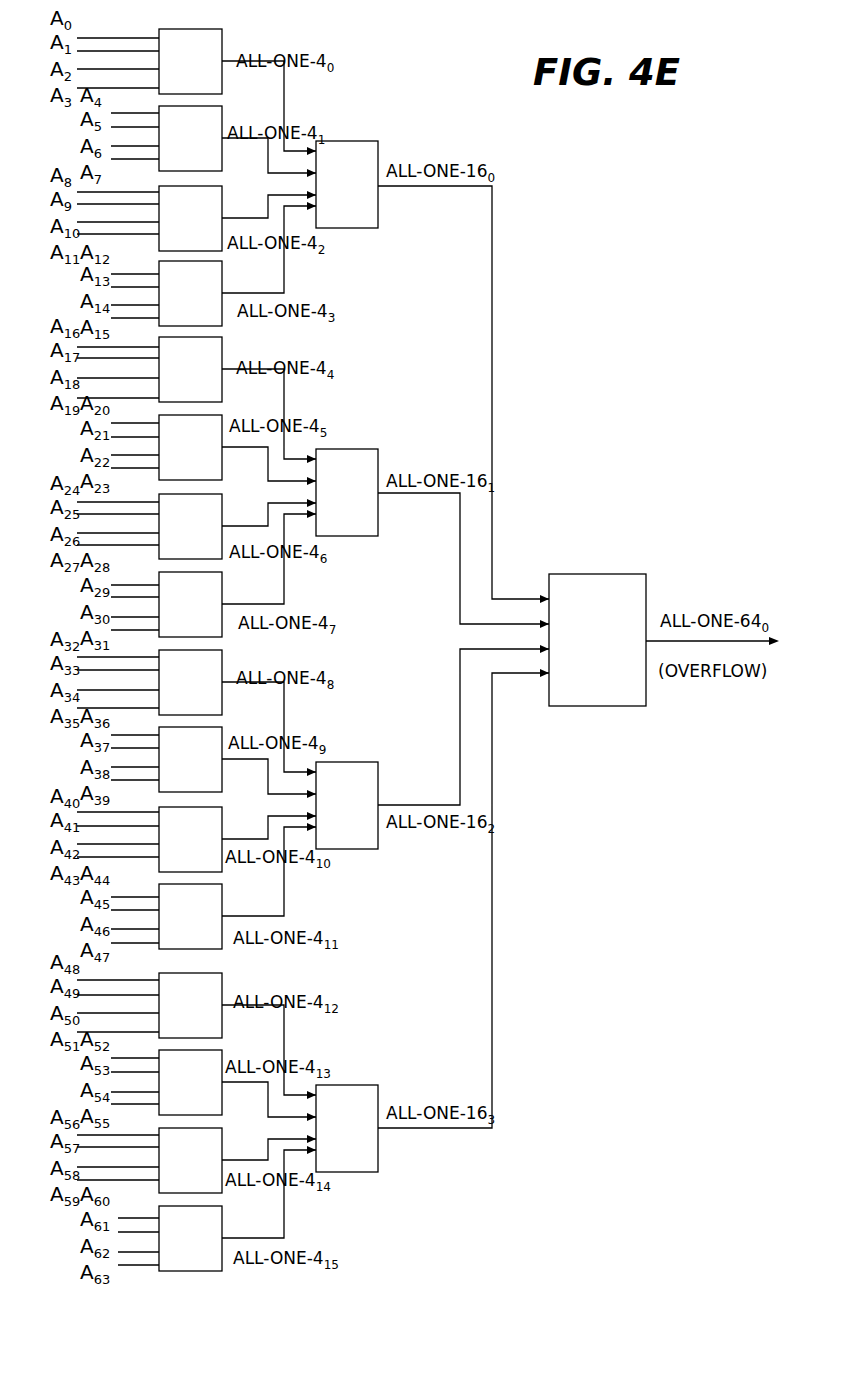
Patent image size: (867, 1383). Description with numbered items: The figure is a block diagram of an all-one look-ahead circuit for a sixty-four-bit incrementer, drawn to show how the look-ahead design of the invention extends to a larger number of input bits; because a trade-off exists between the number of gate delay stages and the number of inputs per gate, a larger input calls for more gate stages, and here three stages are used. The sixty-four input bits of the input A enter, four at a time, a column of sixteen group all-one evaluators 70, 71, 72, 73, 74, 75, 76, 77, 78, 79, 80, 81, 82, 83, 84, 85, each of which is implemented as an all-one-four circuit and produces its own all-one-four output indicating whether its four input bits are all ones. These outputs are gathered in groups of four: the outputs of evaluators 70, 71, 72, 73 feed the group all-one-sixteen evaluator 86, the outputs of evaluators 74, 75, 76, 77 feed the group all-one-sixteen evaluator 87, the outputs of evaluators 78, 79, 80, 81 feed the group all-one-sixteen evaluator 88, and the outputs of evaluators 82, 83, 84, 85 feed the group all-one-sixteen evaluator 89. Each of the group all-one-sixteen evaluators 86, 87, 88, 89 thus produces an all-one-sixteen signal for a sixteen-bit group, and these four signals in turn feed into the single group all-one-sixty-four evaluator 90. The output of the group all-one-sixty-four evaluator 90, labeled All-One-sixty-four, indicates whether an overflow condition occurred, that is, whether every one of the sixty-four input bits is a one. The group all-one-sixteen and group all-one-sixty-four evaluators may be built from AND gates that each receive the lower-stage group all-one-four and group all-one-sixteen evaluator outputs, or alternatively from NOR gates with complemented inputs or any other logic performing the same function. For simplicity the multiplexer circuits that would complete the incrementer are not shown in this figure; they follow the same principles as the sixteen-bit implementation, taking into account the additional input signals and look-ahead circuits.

The group all-one evaluator 70 is at (180, 73).
The group all-one evaluator 71 is at (180, 150).
The group all-one evaluator 72 is at (180, 230).
The group all-one evaluator 73 is at (180, 305).
The group all-one evaluator 74 is at (180, 381).
The group all-one evaluator 75 is at (180, 459).
The group all-one evaluator 76 is at (180, 538).
The group all-one evaluator 77 is at (180, 616).
The group all-one evaluator 78 is at (180, 694).
The group all-one evaluator 79 is at (180, 771).
The group all-one evaluator 80 is at (180, 851).
The group all-one evaluator 81 is at (180, 928).
The group all-one evaluator 82 is at (180, 1017).
The group all-one evaluator 83 is at (180, 1094).
The group all-one evaluator 84 is at (180, 1172).
The group all-one evaluator 85 is at (180, 1250).
The group all-one-16 evaluator 86 is at (337, 196).
The group all-one-16 evaluator 87 is at (337, 504).
The group all-one-16 evaluator 88 is at (337, 817).
The group all-one-16 evaluator 89 is at (337, 1140).
The group all-one-64 evaluator 90 is at (587, 650).